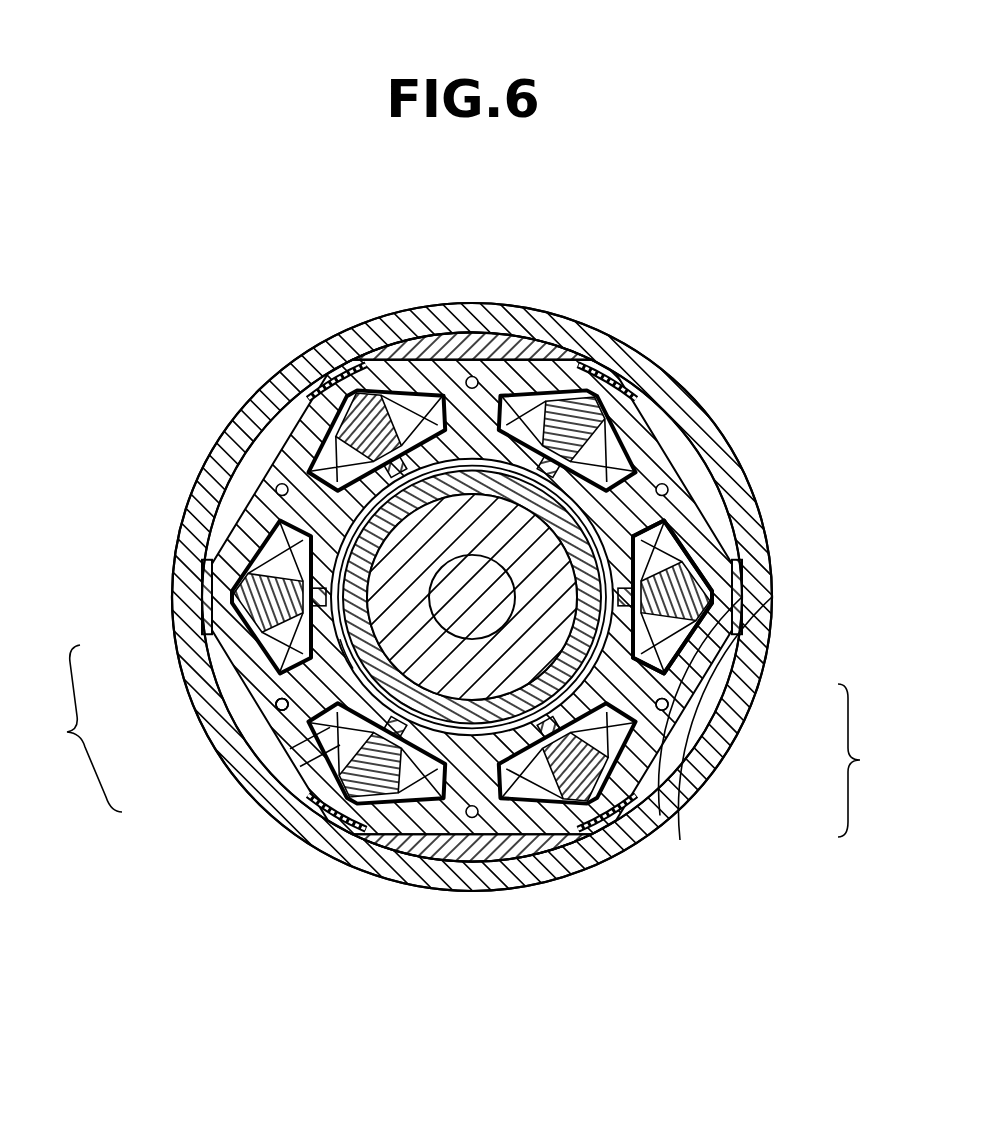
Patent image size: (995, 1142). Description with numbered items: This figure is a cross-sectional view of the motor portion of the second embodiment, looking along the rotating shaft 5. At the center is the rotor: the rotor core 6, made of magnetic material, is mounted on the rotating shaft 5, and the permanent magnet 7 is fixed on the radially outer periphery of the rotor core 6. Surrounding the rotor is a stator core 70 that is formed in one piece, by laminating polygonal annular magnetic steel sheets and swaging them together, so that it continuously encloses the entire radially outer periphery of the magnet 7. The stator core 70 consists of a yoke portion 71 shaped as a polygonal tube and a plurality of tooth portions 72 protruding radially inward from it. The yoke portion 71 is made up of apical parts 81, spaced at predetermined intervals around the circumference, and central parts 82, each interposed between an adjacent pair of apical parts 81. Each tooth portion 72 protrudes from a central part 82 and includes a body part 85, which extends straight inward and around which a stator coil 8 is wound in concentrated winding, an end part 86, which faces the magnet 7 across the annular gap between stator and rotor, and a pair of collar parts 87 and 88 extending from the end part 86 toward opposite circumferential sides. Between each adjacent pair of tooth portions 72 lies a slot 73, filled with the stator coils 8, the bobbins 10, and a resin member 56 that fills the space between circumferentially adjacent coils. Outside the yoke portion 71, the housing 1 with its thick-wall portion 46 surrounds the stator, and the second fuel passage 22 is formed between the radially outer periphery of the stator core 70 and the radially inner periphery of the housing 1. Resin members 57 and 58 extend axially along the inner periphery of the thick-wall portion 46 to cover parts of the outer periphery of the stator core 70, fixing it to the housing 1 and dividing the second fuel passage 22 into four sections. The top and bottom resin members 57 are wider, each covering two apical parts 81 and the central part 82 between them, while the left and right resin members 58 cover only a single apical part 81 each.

The housing 1 is at (665, 393).
The thick-wall portion 46 is at (665, 393).
The rotating shaft 5 is at (472, 585).
The rotor core 6 is at (457, 512).
The permanent magnet 7 is at (545, 460).
The stator coil 8 is at (412, 390).
The bobbin 10 is at (672, 530).
The second fuel passage 22 is at (248, 472).
The resin member 56 is at (595, 362).
The resin member 57 is at (473, 337).
The resin member 58 is at (203, 562).
The stator core 70 is at (497, 363).
The yoke portion 71 is at (780, 717).
The tooth portion 72 is at (162, 728).
The slot 73 is at (348, 828).
The apical part 81 is at (722, 655).
The central part 82 is at (667, 722).
The body part 85 is at (318, 735).
The end part 86 is at (300, 683).
The collar part 87 is at (340, 650).
The collar part 88 is at (330, 763).